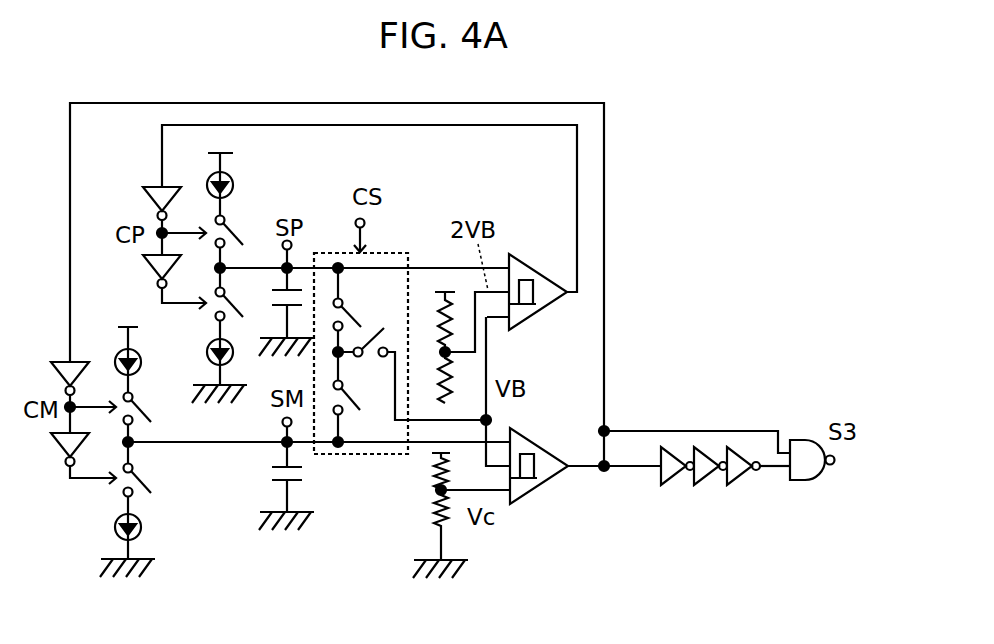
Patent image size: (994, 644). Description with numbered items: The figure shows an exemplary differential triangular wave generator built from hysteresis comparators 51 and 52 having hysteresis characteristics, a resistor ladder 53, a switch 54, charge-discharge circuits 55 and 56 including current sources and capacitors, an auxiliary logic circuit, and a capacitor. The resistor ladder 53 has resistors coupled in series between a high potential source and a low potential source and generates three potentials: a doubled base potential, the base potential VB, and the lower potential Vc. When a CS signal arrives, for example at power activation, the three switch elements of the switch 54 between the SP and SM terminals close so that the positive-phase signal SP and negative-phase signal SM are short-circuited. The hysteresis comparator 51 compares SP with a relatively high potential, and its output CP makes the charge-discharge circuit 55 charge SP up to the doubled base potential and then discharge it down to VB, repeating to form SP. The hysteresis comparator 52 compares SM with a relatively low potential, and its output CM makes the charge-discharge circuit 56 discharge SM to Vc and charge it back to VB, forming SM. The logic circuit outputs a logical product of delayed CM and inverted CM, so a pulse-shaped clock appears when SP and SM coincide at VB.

The hysteresis comparator 51 is at (534, 262).
The hysteresis comparator 52 is at (555, 452).
The resistor ladder 53 is at (424, 504).
The switch 54 is at (343, 457).
The charge-discharge circuit 55 is at (238, 224).
The charge-discharge circuit 56 is at (180, 440).